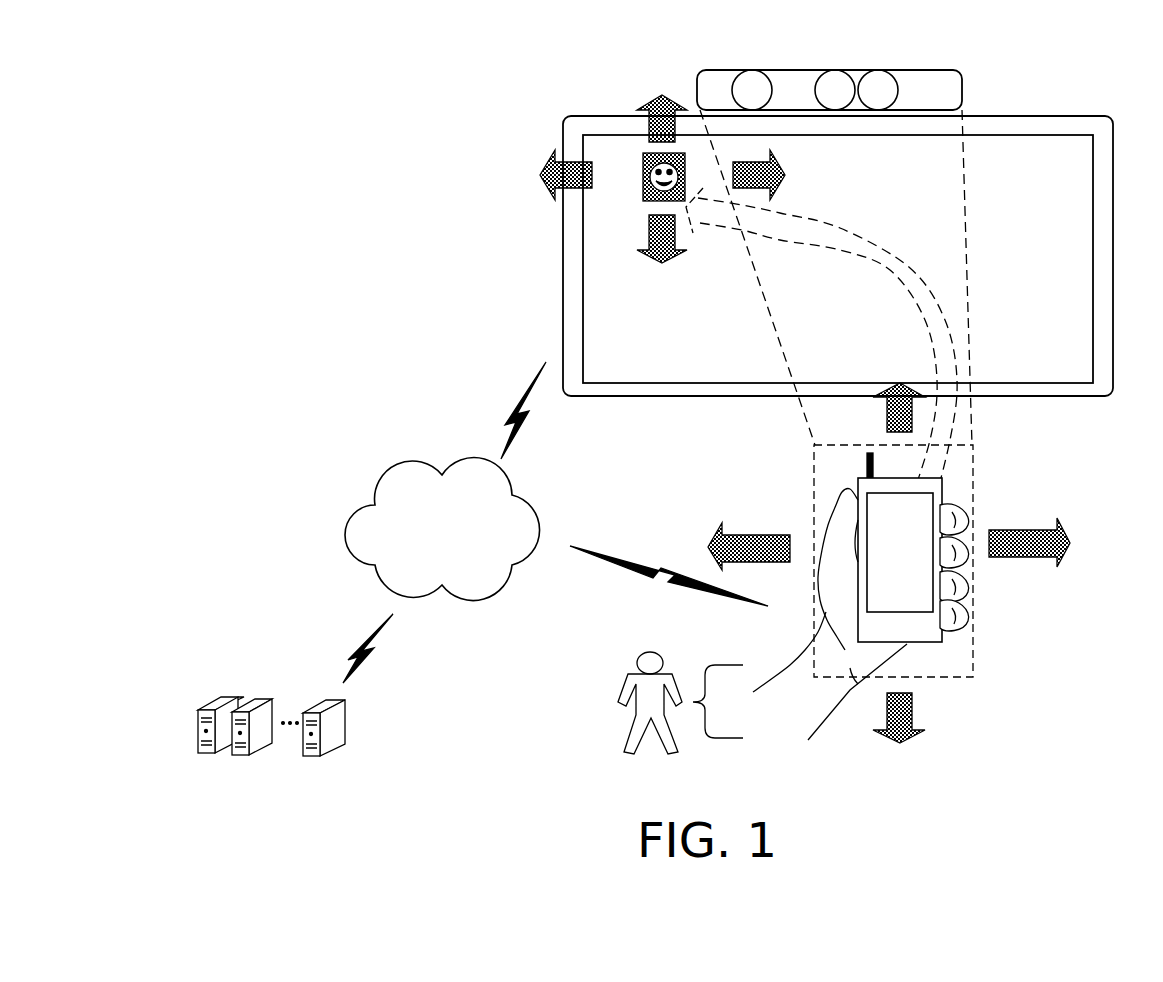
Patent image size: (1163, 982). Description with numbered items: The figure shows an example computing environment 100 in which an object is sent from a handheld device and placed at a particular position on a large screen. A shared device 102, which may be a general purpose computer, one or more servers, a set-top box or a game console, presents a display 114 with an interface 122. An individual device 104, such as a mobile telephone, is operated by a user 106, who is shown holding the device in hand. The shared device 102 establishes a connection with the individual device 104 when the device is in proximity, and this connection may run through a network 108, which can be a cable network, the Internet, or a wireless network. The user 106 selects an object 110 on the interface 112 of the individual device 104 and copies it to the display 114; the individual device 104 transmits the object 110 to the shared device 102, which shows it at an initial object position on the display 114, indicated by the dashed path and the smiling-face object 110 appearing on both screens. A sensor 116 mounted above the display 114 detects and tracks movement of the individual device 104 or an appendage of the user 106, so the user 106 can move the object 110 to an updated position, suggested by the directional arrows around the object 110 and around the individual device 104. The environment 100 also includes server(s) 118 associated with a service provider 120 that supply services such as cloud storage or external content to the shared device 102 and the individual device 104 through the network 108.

The computing environment 100 is at (265, 77).
The shared device 102 is at (838, 271).
The individual device 104 is at (916, 572).
The user 106 is at (788, 621).
The network 108 is at (555, 522).
The object 110 is at (643, 153).
The interface 112 is at (912, 598).
The display 114 is at (563, 257).
The sensor 116 is at (962, 92).
The server(s) 118 is at (271, 745).
The service provider 120 is at (266, 711).
The interface 122 is at (607, 288).